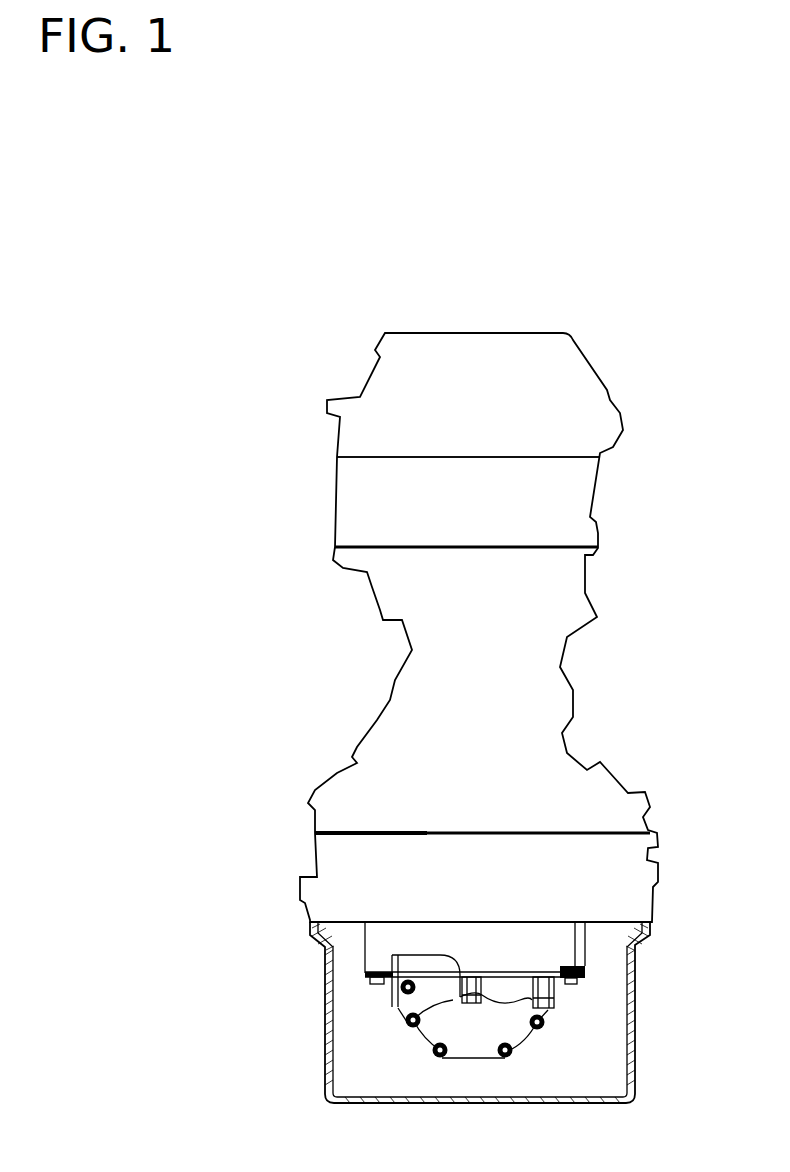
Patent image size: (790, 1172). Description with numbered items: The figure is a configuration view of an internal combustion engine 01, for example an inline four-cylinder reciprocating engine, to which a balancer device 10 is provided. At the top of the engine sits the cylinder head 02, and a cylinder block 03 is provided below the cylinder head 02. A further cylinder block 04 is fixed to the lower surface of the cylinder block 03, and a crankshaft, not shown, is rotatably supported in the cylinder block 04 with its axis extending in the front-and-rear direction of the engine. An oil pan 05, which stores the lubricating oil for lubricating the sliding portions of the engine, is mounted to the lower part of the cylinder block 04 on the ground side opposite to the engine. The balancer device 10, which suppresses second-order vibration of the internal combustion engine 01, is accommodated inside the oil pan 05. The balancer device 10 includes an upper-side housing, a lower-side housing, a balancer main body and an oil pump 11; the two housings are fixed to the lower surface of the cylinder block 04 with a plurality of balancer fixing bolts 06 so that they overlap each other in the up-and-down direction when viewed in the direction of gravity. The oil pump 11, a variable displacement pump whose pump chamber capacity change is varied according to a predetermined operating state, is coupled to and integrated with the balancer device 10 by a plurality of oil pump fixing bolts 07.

The internal combustion engine 01 is at (618, 387).
The cylinder head 02 is at (560, 350).
The cylinder block 03 is at (577, 500).
The cylinder block 04 is at (590, 902).
The oil pan 05 is at (325, 992).
The balancer fixing bolt 06 is at (375, 985).
The oil pump fixing bolt 07 is at (403, 1010).
The balancer device 10 is at (589, 965).
The oil pump 11 is at (425, 1045).